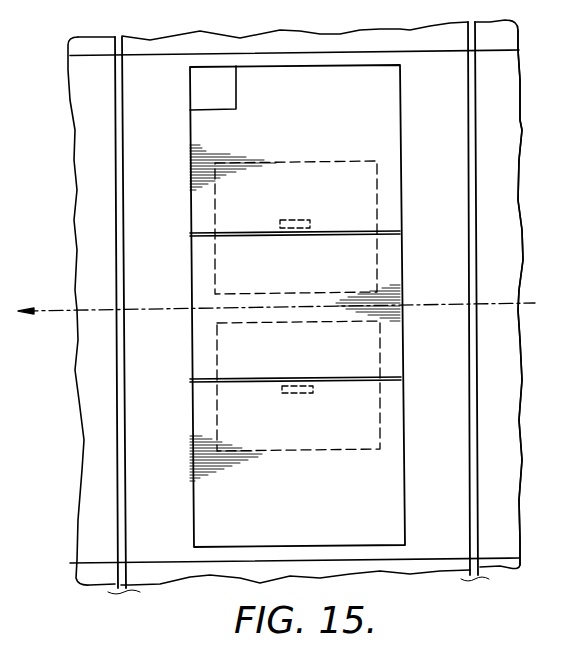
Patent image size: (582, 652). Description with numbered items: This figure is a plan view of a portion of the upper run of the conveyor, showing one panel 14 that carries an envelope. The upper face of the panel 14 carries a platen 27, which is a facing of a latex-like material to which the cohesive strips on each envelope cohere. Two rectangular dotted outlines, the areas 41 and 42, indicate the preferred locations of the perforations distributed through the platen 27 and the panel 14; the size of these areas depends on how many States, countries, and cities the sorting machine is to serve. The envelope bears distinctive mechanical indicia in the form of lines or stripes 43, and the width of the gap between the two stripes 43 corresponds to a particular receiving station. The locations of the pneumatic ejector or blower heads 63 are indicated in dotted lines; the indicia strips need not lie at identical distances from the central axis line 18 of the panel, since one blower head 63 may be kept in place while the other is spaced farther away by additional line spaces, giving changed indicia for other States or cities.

The panel 14 is at (185, 572).
The central axis 18 is at (331, 306).
The platen 27 is at (453, 447).
The area of perforations 41 is at (311, 162).
The area of perforations 42 is at (287, 452).
The indicia lines 43 is at (252, 236).
The blower head 63 is at (305, 219).